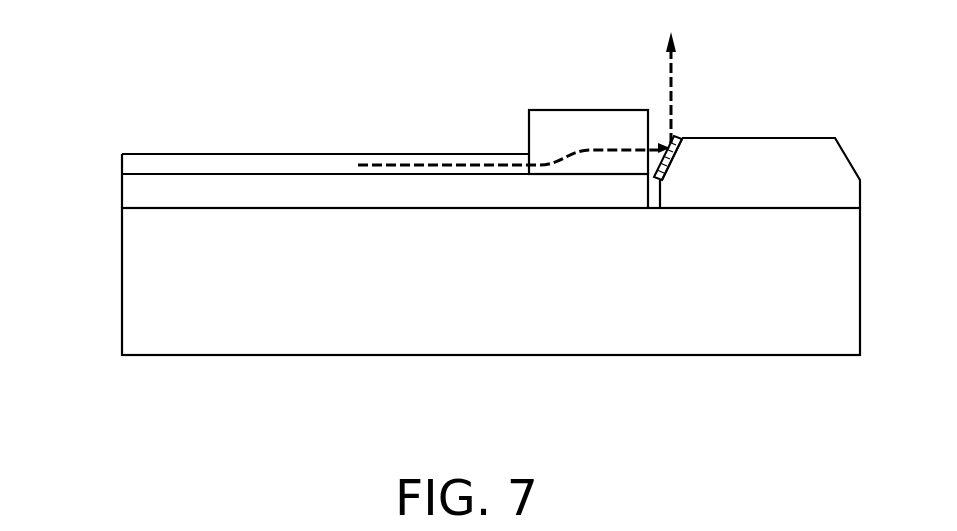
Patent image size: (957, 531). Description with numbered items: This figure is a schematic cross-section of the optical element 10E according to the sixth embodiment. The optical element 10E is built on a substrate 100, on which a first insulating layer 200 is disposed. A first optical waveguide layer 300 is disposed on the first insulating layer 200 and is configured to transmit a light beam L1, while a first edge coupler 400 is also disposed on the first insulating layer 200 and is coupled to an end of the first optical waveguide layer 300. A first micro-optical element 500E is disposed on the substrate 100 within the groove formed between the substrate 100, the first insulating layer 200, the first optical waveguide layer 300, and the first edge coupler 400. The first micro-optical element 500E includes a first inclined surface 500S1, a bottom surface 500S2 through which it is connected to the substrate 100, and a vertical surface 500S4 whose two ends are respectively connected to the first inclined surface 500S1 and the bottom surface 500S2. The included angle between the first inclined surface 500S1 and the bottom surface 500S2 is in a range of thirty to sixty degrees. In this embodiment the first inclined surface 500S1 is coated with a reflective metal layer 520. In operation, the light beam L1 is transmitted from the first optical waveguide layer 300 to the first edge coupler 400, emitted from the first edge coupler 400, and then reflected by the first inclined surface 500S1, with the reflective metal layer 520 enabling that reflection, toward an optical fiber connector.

The substrate 100 is at (135, 273).
The first insulating layer 200 is at (135, 195).
The first optical waveguide layer 300 is at (135, 165).
The first edge coupler 400 is at (577, 127).
The first micro-optical element 500E is at (803, 153).
The first inclined surface 500S1 is at (696, 148).
The bottom surface 500S2 is at (762, 201).
The vertical surface 500S4 is at (674, 193).
The reflective metal layer 520 is at (656, 178).
The light beam L1 is at (432, 162).
The optical element 10E is at (448, 231).